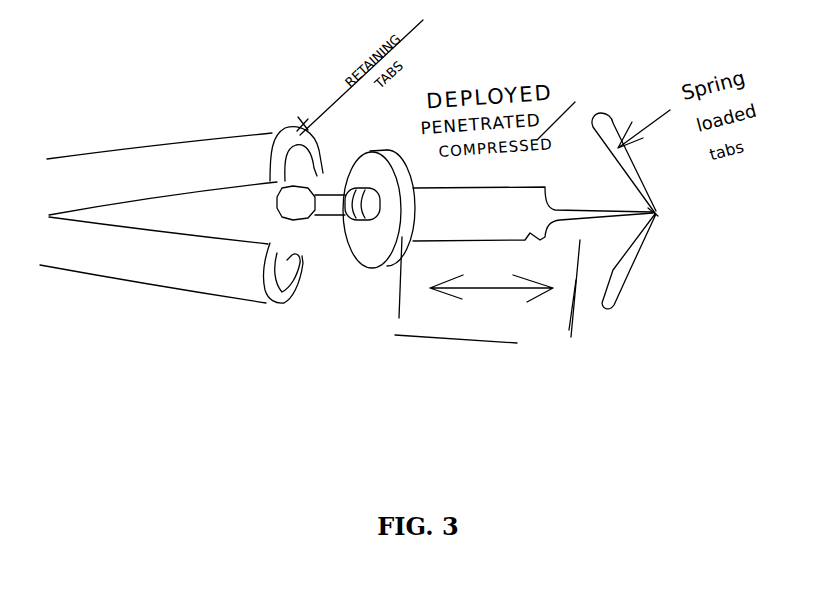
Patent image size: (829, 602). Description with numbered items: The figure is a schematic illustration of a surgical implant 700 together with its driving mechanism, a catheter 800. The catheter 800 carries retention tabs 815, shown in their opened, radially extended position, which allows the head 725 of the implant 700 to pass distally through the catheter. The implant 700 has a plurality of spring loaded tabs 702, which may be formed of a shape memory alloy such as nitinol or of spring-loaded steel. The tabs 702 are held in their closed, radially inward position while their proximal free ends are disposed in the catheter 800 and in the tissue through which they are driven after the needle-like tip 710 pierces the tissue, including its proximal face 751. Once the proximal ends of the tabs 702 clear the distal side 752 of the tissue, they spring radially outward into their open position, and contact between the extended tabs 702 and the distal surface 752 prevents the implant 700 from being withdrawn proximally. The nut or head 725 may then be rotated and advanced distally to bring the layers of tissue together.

The catheter 800 is at (243, 144).
The retention tabs 815 is at (268, 282).
The surgical implant 700 is at (327, 203).
The head 725 is at (383, 241).
The proximal face 751 is at (397, 317).
The distal side 752 is at (567, 310).
The needle-like tip 710 is at (655, 215).
The spring loaded tabs 702 is at (620, 267).